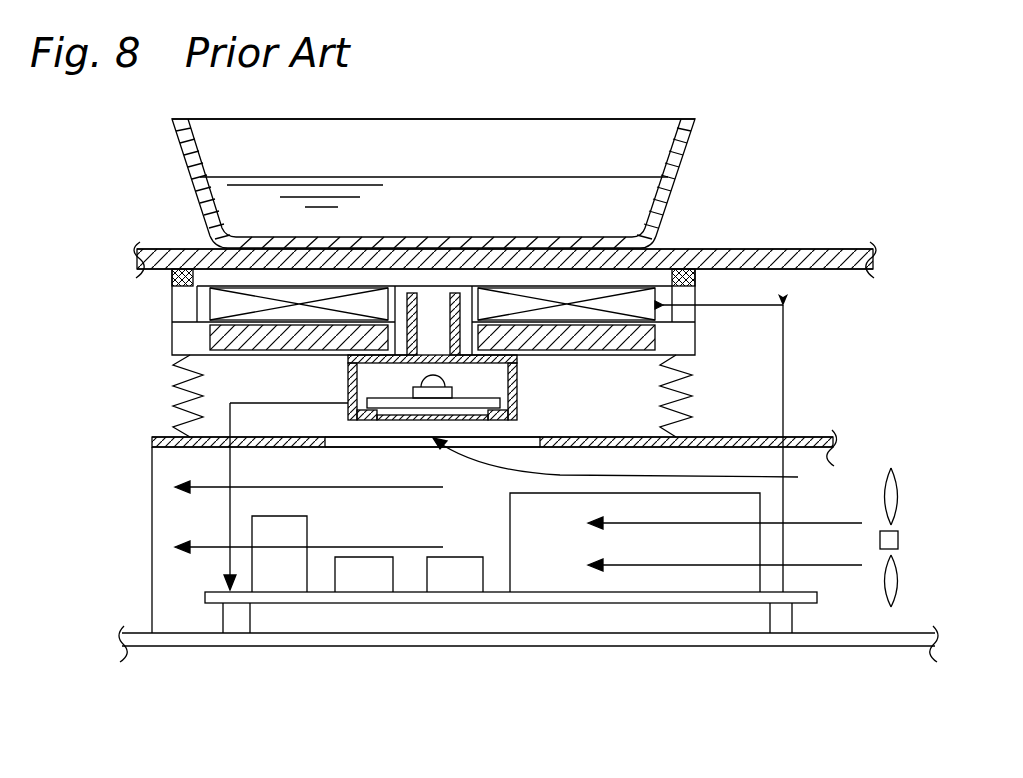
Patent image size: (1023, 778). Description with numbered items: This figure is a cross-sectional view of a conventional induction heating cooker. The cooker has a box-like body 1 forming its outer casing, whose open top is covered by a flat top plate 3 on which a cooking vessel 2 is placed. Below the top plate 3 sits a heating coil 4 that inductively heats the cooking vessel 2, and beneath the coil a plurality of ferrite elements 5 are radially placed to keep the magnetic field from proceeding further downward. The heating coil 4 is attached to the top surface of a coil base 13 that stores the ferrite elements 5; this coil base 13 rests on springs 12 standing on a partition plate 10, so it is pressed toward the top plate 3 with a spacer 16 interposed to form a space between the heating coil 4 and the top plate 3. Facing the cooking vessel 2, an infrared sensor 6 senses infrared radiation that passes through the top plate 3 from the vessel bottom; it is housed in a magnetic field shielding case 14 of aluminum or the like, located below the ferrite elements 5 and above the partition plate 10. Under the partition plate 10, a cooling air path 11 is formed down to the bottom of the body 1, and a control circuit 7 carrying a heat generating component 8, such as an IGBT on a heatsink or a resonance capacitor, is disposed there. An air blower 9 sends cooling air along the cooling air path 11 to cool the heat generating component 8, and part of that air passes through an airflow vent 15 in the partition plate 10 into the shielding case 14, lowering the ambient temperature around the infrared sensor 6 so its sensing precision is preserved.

The body 1 is at (268, 647).
The cooking vessel 2 is at (680, 143).
The top plate 3 is at (828, 265).
The heating coil 4 is at (218, 302).
The ferrite elements 5 is at (225, 335).
The infrared sensor 6 is at (453, 393).
The control circuit 7 is at (327, 603).
The heat generating component 8 is at (460, 580).
The air blower 9 is at (888, 587).
The partition plate 10 is at (800, 437).
The cooling air path 11 is at (185, 605).
The springs 12 is at (178, 397).
The coil base 13 is at (682, 342).
The magnetic field shielding case 14 is at (348, 382).
The airflow vent 15 is at (398, 447).
The spacer 16 is at (183, 268).